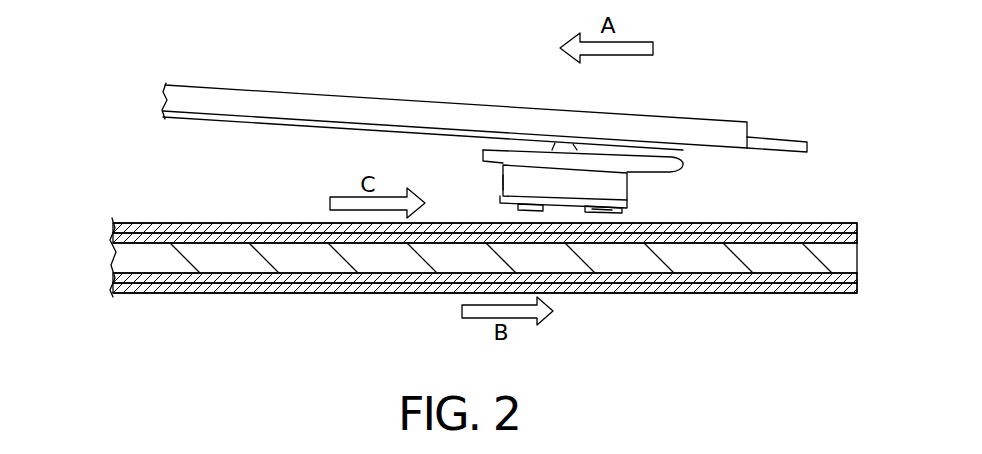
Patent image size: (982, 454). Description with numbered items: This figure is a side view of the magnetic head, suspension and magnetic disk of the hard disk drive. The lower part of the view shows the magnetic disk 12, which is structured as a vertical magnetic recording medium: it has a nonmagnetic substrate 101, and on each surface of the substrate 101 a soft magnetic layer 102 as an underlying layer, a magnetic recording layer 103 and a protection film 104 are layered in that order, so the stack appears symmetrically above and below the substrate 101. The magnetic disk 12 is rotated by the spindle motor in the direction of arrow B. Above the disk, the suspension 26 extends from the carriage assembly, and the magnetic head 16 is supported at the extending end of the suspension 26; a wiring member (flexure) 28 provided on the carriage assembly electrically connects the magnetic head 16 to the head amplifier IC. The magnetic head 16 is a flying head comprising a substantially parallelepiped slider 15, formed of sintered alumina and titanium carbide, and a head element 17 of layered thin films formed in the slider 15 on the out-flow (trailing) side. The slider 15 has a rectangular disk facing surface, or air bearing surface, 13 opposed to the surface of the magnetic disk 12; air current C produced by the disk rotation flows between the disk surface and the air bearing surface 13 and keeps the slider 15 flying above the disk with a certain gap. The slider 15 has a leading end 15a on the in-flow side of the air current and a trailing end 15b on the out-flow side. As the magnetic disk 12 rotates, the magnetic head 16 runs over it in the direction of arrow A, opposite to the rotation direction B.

The magnetic disk 12 is at (150, 200).
The disk facing surface (air bearing surface) 13 is at (575, 220).
The slider 15 is at (603, 178).
The leading end 15a is at (490, 168).
The trailing end 15b is at (627, 200).
The magnetic head 16 is at (480, 177).
The head element 17 is at (621, 220).
The suspension 26 is at (300, 106).
The wiring member (flexure) 28 is at (263, 125).
The substrate 101 is at (230, 263).
The soft magnetic layer 102 is at (115, 254).
The magnetic recording layer 103 is at (189, 226).
The protection film 104 is at (112, 222).